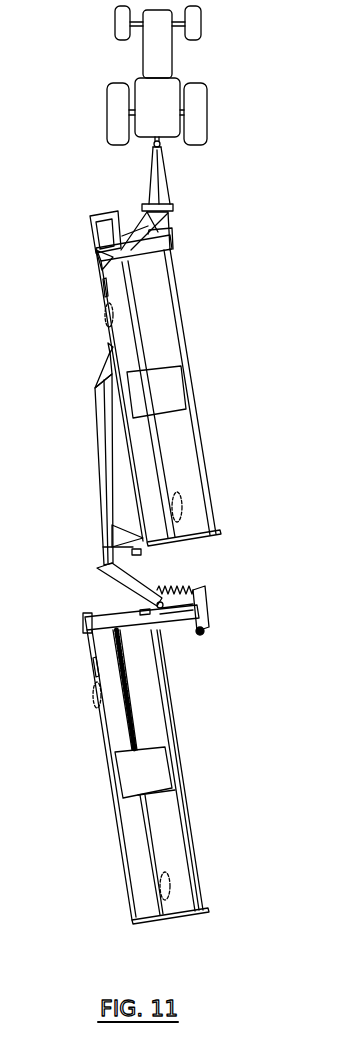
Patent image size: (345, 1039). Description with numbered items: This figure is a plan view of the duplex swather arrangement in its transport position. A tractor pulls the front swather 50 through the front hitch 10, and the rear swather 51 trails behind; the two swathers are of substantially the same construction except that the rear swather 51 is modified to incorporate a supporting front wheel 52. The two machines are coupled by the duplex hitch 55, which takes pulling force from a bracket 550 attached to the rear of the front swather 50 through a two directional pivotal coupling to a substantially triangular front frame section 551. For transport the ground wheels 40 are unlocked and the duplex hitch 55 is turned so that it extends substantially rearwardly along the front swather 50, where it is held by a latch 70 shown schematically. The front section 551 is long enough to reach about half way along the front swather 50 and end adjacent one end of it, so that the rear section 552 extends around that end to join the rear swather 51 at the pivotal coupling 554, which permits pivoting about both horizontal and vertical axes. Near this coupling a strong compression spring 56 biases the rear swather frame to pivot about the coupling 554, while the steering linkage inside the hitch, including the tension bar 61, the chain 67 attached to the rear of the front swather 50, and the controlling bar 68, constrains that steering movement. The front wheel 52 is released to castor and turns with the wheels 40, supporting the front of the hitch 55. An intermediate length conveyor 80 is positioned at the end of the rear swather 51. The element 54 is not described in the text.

The hitch 10 is at (182, 168).
The front swather 50 is at (198, 350).
The rear swather 51 is at (198, 758).
The wheels 40 is at (105, 317).
The bracket 550 is at (125, 368).
The duplex hitch 55 is at (92, 438).
The front frame section 551 is at (105, 473).
The rear section 552 is at (110, 570).
The pivotal coupling 554 is at (162, 608).
The chain 67 is at (102, 368).
The bar 68 is at (110, 346).
The latch 70 is at (143, 535).
The tension bar 61 is at (141, 553).
The compression spring 56 is at (175, 588).
The hinge plate 54 is at (212, 604).
The front wheel 52 is at (205, 633).
The intermediate length conveyor 80 is at (118, 615).